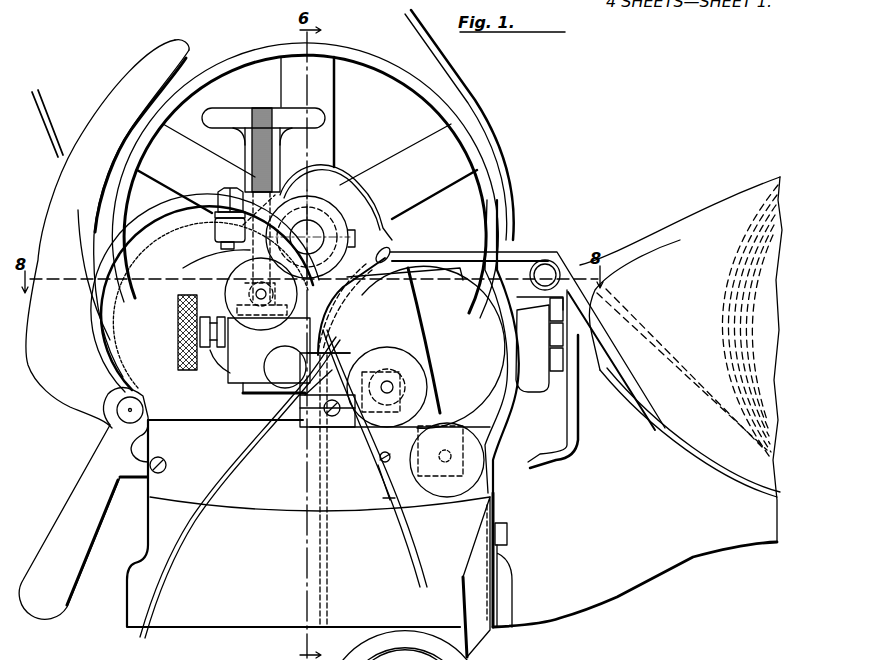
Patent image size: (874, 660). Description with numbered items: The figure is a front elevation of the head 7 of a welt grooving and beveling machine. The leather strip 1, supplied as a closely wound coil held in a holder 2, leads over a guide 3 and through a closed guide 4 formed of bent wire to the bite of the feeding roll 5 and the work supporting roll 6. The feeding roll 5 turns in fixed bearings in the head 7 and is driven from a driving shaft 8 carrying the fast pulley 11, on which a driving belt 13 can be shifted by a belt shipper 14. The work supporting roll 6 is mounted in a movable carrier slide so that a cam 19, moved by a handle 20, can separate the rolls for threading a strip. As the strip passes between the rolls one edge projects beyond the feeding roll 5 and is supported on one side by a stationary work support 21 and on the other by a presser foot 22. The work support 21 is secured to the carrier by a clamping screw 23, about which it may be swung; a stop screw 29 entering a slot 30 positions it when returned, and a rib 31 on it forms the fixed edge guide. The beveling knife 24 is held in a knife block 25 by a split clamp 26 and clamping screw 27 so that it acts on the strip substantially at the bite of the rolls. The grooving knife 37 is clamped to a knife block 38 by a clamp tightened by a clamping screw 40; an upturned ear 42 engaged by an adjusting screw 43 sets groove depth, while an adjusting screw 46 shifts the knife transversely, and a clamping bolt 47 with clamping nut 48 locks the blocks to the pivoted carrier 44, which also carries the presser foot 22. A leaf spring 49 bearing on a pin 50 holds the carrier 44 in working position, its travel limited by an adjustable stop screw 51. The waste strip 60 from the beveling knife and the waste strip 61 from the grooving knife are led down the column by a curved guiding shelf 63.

The leather strip 1 is at (572, 270).
The holder 2 is at (727, 227).
The guide 3 is at (547, 262).
The closed guide 4 is at (400, 240).
The feeding roll 5 is at (160, 350).
The work supporting roll 6 is at (480, 380).
The head 7 is at (160, 520).
The driving shaft 8 is at (370, 196).
The fast pulley 11 is at (370, 60).
The driving belt 13 is at (463, 103).
The belt shipper 14 is at (57, 194).
The cam 19 is at (424, 645).
The handle 20 is at (90, 470).
The work support 21 is at (408, 297).
The presser foot 22 is at (327, 334).
The clamping screw 23 is at (468, 467).
The beveling knife 24 is at (305, 415).
The knife block 25 is at (340, 432).
The split clamp 26 is at (312, 420).
The clamping screw 27 is at (327, 420).
The stop screw 29 is at (385, 462).
The slot 30 is at (383, 500).
The rib 31 is at (374, 220).
The grooving knife 37 is at (290, 400).
The knife block 38 is at (243, 384).
The clamping screw 40 is at (285, 367).
The upturned ear 42 is at (208, 352).
The adjusting screw 43 is at (183, 371).
The carrier 44 is at (217, 251).
The adjusting screw 46 is at (231, 290).
The clamping bolt 47 is at (252, 147).
The clamping nut 48 is at (238, 110).
The leaf spring 49 is at (313, 233).
The pin 50 is at (215, 232).
The adjustable stop screw 51 is at (220, 192).
The waste strip 60 is at (413, 567).
The waste strip 61 is at (157, 583).
The curved guiding shelf 63 is at (478, 600).